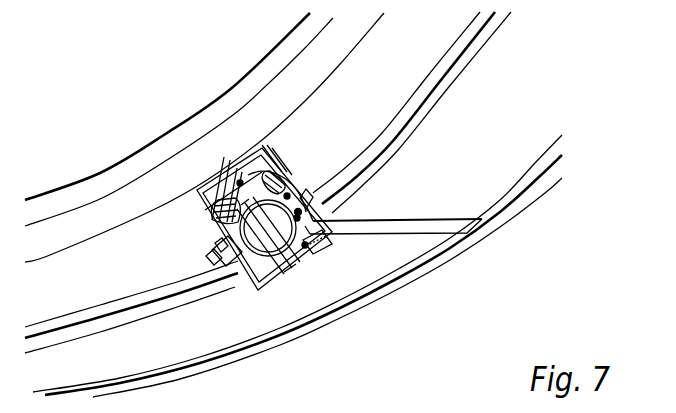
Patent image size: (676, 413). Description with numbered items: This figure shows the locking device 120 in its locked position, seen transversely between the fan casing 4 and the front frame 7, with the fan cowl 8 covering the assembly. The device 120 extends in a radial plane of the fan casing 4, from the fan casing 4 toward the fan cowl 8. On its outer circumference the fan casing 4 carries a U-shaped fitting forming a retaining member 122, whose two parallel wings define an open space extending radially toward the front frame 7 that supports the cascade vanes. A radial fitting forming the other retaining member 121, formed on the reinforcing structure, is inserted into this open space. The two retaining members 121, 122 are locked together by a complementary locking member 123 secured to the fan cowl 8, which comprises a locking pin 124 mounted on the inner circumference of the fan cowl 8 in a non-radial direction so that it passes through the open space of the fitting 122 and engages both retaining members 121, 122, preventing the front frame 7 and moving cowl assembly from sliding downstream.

The fan casing 4 is at (353, 30).
The front frame 7 is at (477, 40).
The fan cowl 8 is at (537, 190).
The locking device 120 is at (309, 170).
The retaining member 121 is at (293, 251).
The retaining member 122 is at (213, 177).
The complementary locking member 123 is at (313, 245).
The locking pin 124 is at (318, 208).